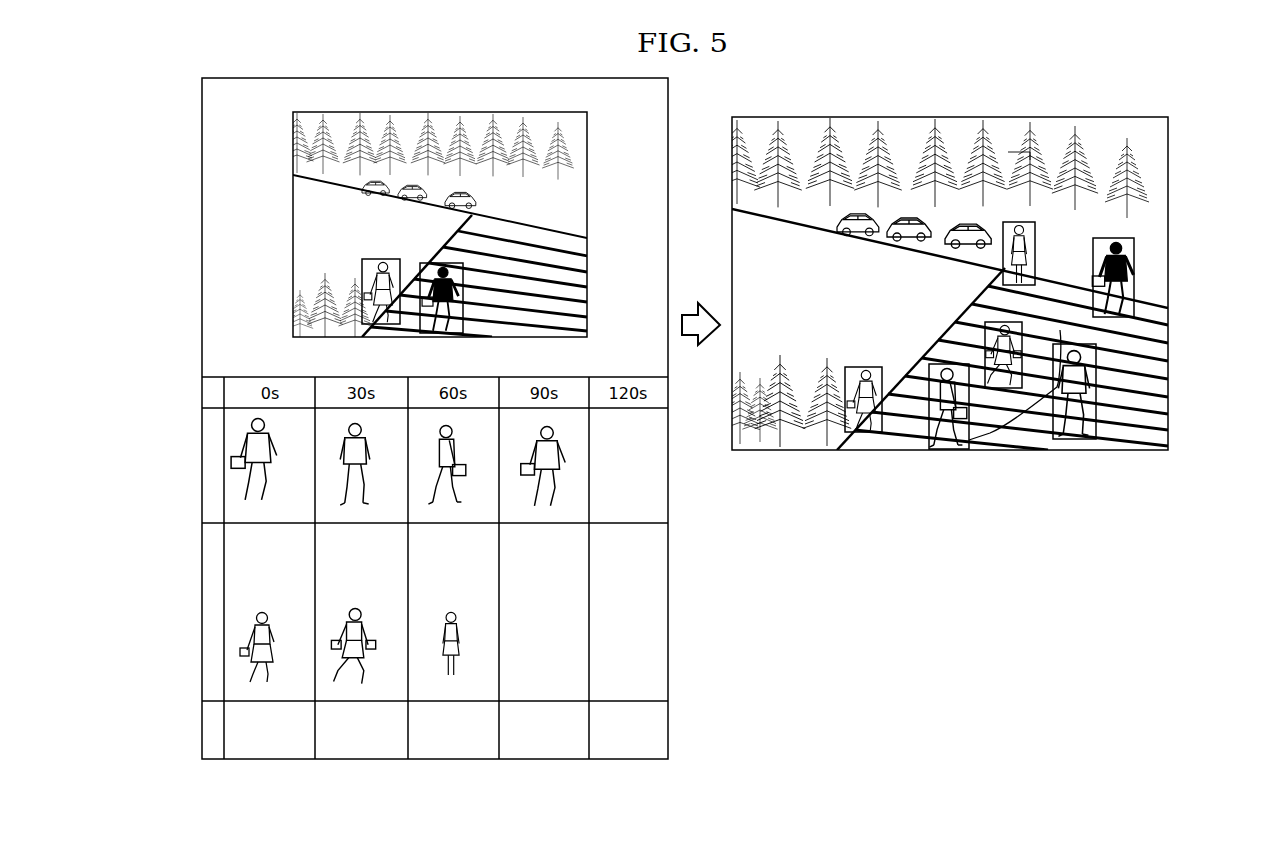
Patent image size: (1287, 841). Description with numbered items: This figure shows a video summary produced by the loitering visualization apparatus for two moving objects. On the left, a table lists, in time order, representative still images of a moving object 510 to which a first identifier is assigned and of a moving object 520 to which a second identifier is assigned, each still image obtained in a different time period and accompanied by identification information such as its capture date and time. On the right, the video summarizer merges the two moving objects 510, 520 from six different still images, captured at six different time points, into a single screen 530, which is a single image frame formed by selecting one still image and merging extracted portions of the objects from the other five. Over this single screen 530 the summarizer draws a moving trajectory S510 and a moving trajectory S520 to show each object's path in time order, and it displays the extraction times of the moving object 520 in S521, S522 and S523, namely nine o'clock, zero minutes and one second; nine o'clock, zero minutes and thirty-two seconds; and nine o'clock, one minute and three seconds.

The moving object 510 is at (202, 469).
The moving object 520 is at (202, 653).
The single screen 530 is at (1097, 117).
The moving trajectory S510 is at (1097, 277).
The moving trajectory S520 is at (1067, 290).
The time display S521 is at (865, 432).
The time display S522 is at (1003, 390).
The time display S523 is at (957, 433).